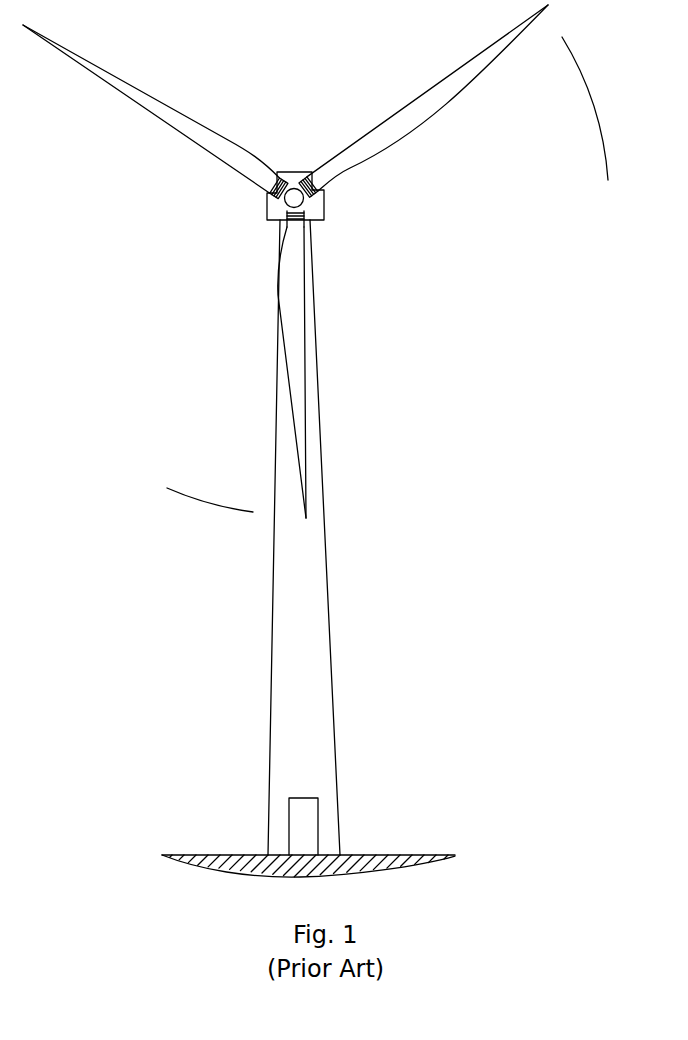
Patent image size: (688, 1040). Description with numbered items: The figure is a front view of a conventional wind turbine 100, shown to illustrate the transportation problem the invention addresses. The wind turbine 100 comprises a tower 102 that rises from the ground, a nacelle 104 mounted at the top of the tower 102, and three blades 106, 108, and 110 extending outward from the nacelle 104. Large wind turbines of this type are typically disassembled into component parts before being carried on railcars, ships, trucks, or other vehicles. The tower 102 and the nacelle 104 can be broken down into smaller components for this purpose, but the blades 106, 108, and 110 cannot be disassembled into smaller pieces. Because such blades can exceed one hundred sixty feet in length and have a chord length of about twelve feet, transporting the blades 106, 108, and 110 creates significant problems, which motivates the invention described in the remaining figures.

The wind turbine 100 is at (190, 663).
The tower 102 is at (328, 615).
The nacelle 104 is at (325, 213).
The blade 106 is at (415, 122).
The blade 108 is at (225, 165).
The blade 110 is at (305, 395).